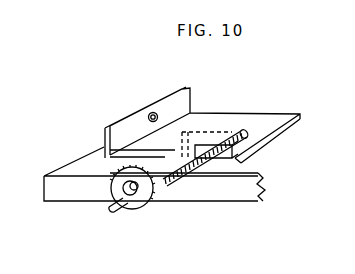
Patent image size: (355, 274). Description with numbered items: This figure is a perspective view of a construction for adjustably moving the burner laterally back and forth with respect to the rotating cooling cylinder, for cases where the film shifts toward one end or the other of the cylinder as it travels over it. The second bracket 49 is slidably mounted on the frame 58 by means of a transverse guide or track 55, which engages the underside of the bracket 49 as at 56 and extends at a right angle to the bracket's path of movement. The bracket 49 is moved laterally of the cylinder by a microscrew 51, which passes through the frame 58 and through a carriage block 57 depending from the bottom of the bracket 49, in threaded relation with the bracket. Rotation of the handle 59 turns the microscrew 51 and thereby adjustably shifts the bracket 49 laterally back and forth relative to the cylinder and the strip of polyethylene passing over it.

The second bracket 49 is at (258, 112).
The microscrew 51 is at (183, 173).
The transverse guide or track 55 is at (83, 155).
The underside engagement of bracket 56 is at (112, 153).
The carriage block 57 is at (237, 162).
The frame 58 is at (237, 195).
The handle 59 is at (143, 203).